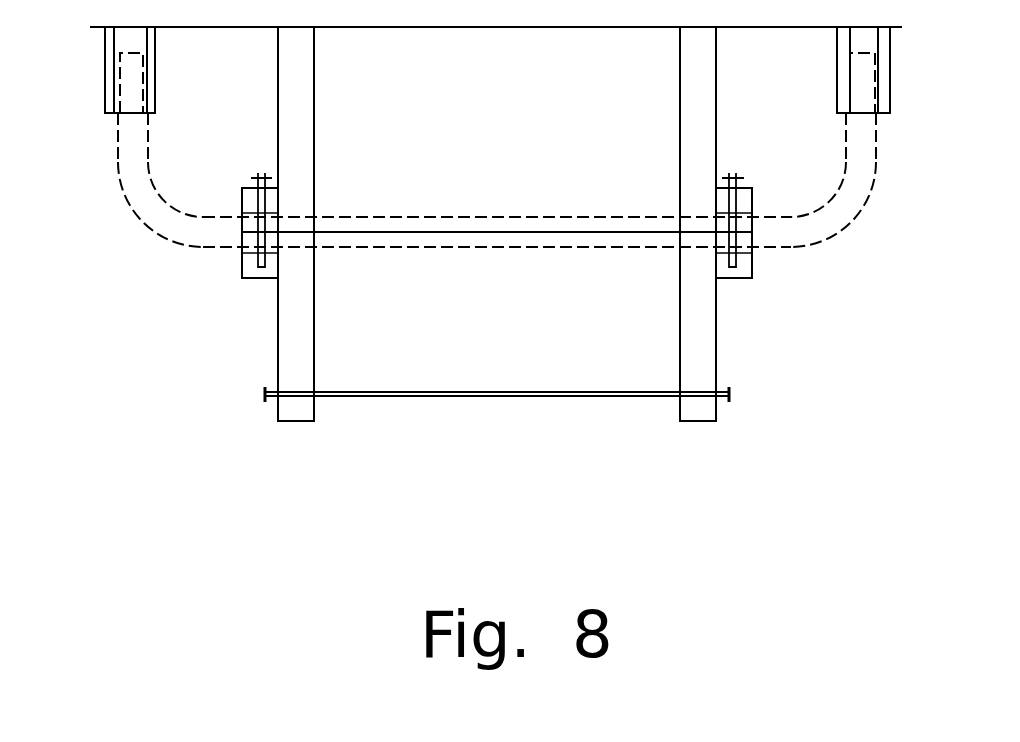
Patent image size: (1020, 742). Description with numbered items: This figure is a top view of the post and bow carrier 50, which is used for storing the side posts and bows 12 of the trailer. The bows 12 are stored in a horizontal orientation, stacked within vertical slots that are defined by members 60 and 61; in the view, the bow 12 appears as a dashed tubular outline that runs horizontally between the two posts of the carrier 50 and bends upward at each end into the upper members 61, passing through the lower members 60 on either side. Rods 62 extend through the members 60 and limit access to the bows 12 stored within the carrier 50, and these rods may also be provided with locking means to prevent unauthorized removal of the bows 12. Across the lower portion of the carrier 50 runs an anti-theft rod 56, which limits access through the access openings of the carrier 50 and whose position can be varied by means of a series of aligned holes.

The bow 12 is at (837, 207).
The carrier 50 is at (222, 464).
The anti-theft rod 56 is at (497, 392).
The member 60 is at (243, 278).
The member 61 is at (157, 48).
The rod 62 is at (262, 203).